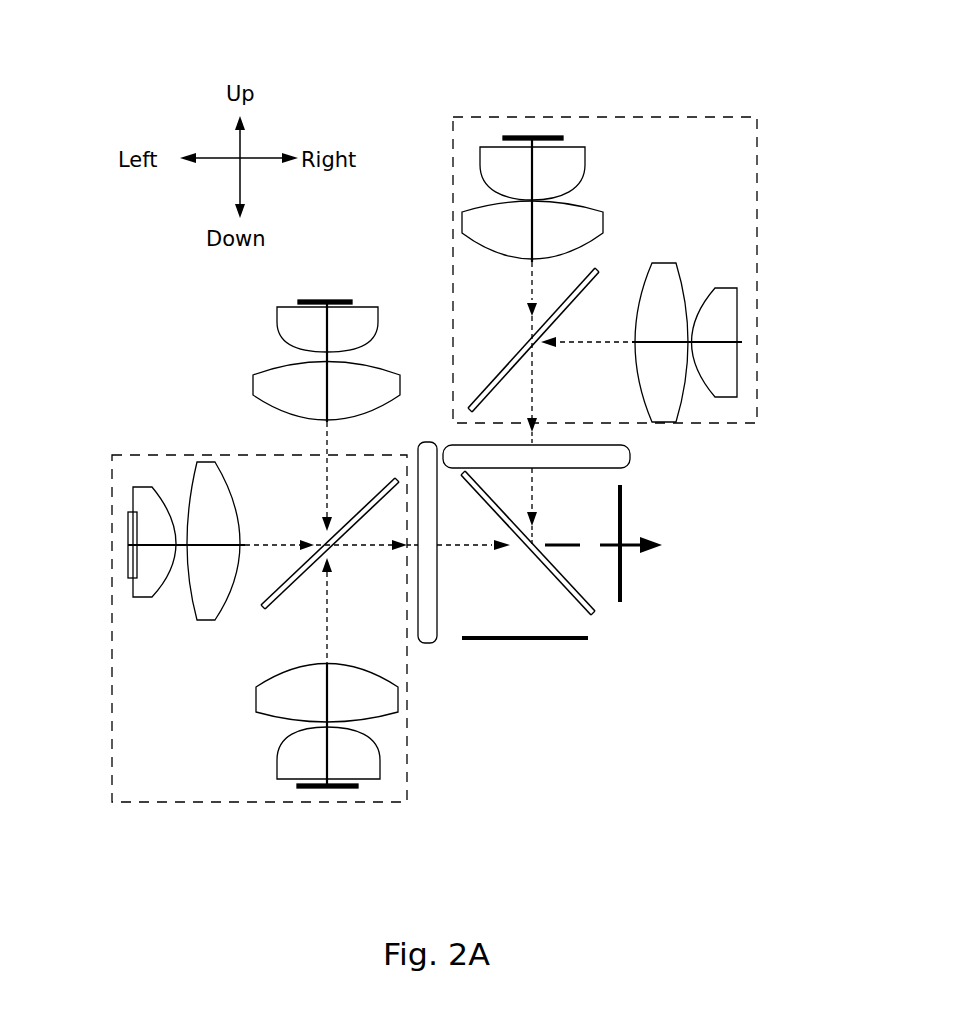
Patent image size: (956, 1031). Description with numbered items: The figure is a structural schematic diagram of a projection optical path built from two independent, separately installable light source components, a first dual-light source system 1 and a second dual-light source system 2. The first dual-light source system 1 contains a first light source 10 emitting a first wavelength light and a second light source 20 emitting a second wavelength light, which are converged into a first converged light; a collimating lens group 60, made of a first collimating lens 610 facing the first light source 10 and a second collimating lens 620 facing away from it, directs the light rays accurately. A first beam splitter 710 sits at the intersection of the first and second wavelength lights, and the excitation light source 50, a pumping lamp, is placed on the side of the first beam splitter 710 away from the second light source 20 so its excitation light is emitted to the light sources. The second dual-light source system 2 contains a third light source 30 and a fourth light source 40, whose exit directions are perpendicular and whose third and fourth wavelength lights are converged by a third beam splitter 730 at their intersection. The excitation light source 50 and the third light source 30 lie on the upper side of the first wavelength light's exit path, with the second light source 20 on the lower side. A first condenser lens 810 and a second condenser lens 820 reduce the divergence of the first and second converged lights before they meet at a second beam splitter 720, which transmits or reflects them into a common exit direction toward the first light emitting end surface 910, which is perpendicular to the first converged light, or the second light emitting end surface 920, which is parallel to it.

The first dual-light source system 1 is at (172, 802).
The second dual-light source system 2 is at (682, 117).
The first light source 10 is at (126, 540).
The second light source 20 is at (330, 790).
The third light source 30 is at (543, 133).
The fourth light source 40 is at (745, 345).
The excitation light source 50 is at (308, 298).
The collimating lens group 60 is at (172, 479).
The first collimating lens 610 is at (135, 482).
The second collimating lens 620 is at (192, 468).
The first beam splitter 710 is at (318, 535).
The second beam splitter 720 is at (597, 613).
The third beam splitter 730 is at (598, 269).
The first condenser lens 810 is at (432, 645).
The second condenser lens 820 is at (630, 457).
The first light emitting end surface 910 is at (623, 571).
The second light emitting end surface 920 is at (520, 640).